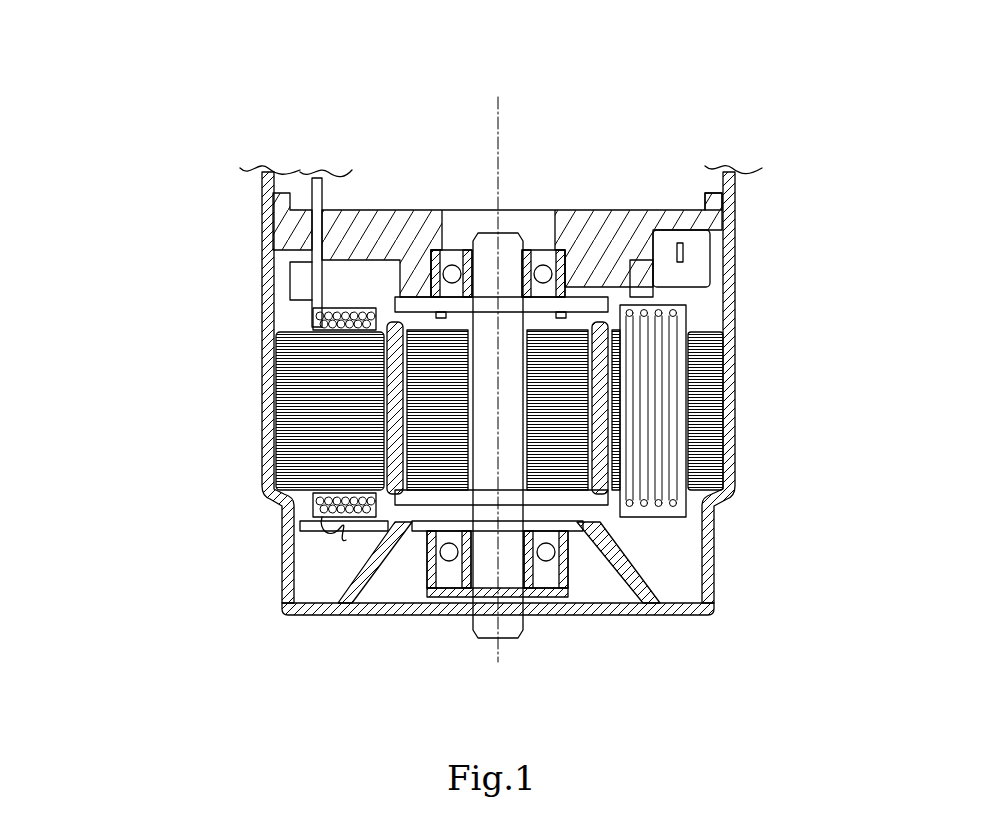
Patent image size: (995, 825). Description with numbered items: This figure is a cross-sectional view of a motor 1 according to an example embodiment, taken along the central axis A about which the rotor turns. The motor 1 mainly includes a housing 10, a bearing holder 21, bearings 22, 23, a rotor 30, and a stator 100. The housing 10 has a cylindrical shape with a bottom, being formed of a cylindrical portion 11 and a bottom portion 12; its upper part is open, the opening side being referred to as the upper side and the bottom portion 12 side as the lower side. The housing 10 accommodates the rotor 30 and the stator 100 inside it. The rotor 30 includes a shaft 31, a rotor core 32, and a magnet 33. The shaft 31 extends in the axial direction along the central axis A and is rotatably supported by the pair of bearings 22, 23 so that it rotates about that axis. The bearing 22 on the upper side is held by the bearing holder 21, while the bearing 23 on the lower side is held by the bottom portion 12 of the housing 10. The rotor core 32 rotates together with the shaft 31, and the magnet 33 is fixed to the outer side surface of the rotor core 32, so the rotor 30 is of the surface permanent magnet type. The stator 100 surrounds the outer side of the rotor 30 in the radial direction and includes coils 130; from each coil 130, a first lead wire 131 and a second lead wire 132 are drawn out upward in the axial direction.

The motor 1 is at (737, 117).
The housing 10 is at (262, 447).
The cylindrical portion 11 is at (724, 420).
The bottom portion 12 is at (670, 612).
The bearing holder 21 is at (388, 231).
The bearing 22 is at (537, 253).
The bearing 23 is at (536, 592).
The rotor 30 is at (416, 523).
The shaft 31 is at (490, 613).
The rotor core 32 is at (613, 567).
The magnet 33 is at (700, 328).
The stator 100 is at (724, 361).
The coil 130 is at (702, 272).
The first lead wire 131 is at (686, 222).
The second lead wire 132 is at (307, 243).